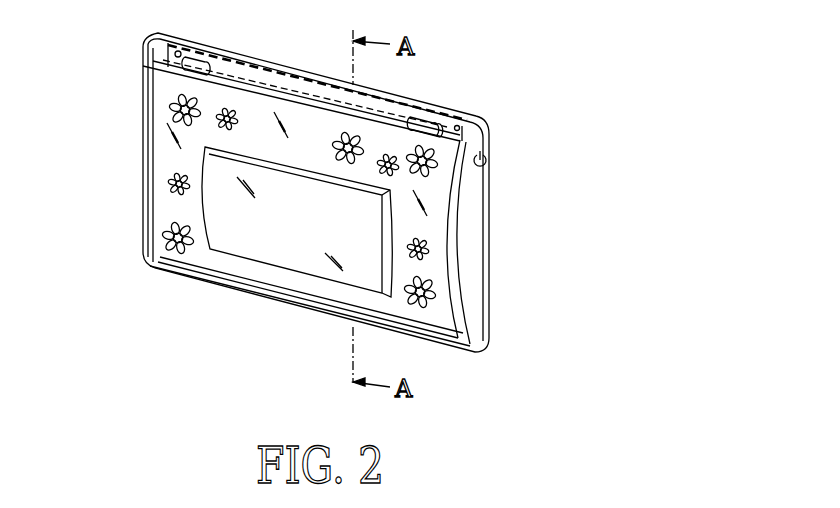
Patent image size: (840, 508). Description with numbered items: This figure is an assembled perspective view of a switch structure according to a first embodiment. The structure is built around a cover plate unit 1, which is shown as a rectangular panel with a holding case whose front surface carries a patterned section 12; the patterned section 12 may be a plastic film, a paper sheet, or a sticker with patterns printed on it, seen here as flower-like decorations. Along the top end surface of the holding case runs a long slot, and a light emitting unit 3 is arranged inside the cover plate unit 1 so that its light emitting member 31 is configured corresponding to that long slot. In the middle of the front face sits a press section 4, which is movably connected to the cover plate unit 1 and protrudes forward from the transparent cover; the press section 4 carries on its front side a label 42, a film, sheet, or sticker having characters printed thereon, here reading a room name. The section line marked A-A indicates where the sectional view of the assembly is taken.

The cover plate unit 1 is at (147, 92).
The light emitting unit 3 is at (263, 63).
The light emitting member 31 is at (390, 117).
The patterned section 12 is at (170, 186).
The press section 4 is at (208, 230).
The label 42 is at (288, 233).